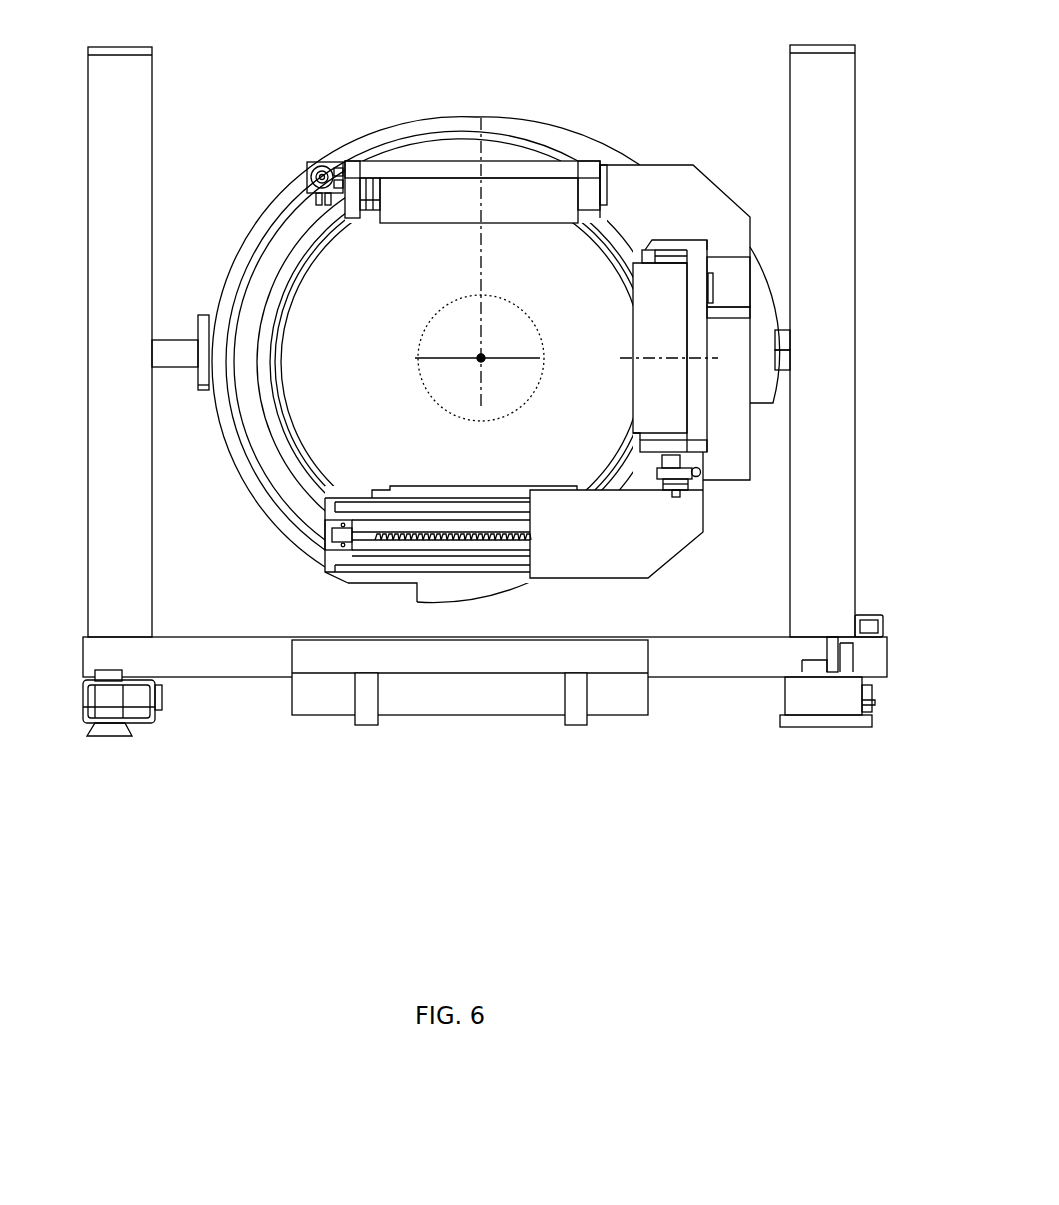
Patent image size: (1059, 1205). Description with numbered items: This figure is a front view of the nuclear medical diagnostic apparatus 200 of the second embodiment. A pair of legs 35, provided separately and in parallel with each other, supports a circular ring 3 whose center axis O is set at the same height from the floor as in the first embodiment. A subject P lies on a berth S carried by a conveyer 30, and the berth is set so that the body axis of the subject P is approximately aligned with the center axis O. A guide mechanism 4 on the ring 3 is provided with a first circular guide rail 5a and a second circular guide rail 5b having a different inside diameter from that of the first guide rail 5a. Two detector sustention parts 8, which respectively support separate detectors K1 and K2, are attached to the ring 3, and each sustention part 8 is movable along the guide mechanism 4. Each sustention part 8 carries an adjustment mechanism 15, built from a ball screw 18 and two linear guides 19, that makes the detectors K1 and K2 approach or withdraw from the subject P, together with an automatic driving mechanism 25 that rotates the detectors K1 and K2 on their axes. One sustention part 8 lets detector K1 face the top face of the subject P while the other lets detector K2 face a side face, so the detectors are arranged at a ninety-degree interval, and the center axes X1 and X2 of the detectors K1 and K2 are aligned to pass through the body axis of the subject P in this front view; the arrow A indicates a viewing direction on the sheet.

The apparatus 200 is at (472, 857).
The circular ring 3 is at (505, 118).
The guide mechanism 4 is at (215, 297).
The first circular guide rail 5a is at (268, 238).
The second circular guide rail 5b is at (278, 315).
The detector sustention part 8 is at (678, 160).
The adjustment mechanism 15 is at (451, 516).
The ball screw 18 is at (475, 540).
The linear guides 19 is at (418, 506).
The automatic driving mechanism 25 is at (318, 152).
The conveyer 30 is at (366, 725).
The legs 35 is at (88, 101).
The berth S is at (650, 655).
The viewing direction A is at (572, 102).
The subject P is at (423, 320).
The center axis O is at (478, 364).
The center axis of detector K1 X1 is at (487, 203).
The center axis of detector K2 X2 is at (663, 358).
The detector K1 is at (483, 238).
The detector K2 is at (640, 350).